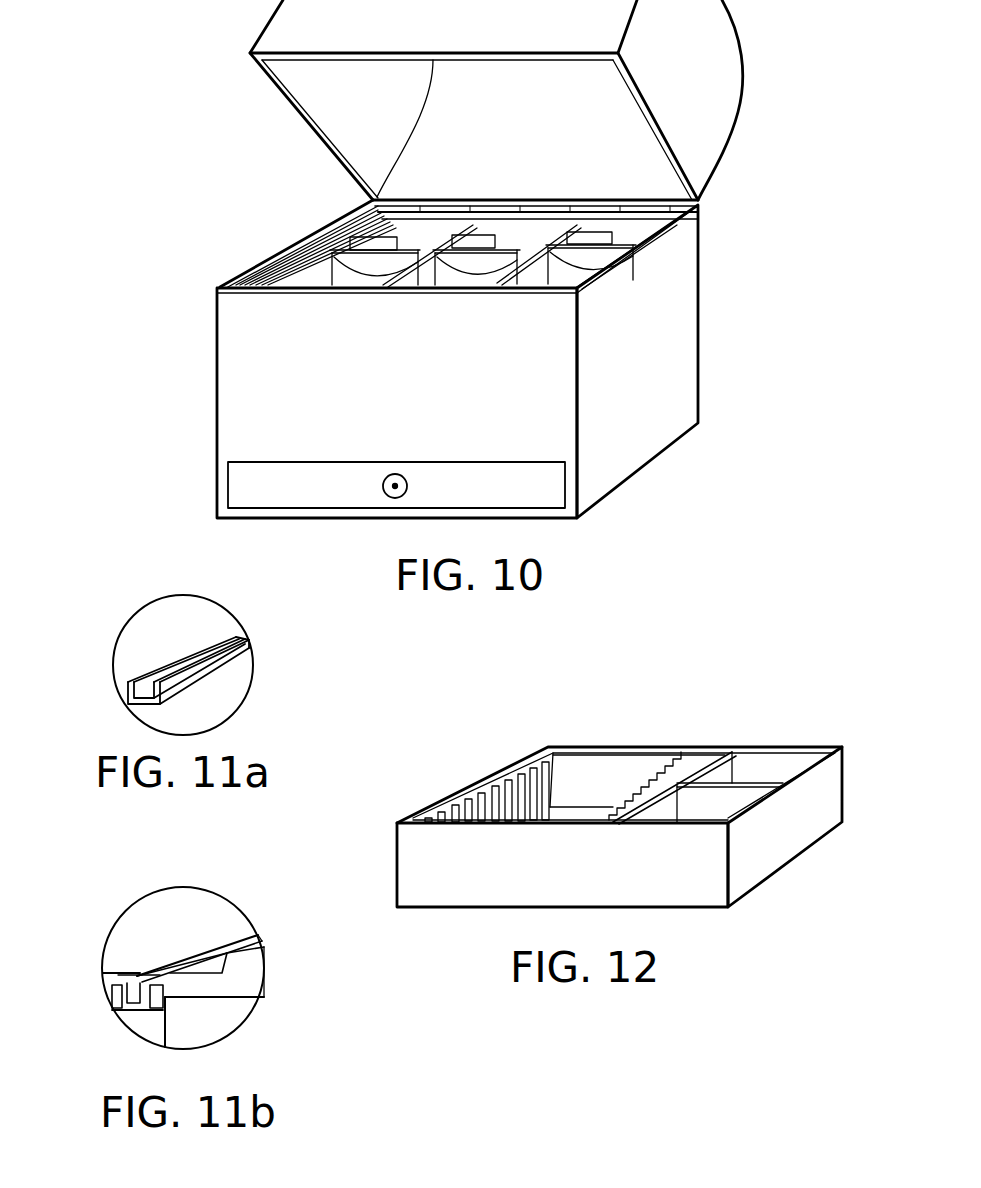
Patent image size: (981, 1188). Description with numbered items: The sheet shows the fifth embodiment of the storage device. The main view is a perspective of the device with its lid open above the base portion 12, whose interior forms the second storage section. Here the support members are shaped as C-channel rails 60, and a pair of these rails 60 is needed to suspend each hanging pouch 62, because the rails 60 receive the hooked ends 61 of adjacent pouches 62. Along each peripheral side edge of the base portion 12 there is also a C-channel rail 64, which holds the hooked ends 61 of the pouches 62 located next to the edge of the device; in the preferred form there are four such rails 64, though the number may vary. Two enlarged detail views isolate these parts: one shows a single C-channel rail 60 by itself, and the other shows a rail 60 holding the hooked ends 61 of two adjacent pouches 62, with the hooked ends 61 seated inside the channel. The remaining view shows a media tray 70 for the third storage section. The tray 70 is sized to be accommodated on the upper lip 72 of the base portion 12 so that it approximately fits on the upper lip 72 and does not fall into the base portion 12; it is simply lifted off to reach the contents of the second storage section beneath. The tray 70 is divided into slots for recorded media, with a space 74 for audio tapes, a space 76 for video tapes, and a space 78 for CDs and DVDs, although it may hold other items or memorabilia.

In FIG. 10, the base portion 12 is at (217, 355).
In FIG. 10, the C-channel rail 60 is at (310, 233).
In FIG. 11A, the C-channel rail 60 is at (180, 658).
In FIG. 11B, the C-channel rail 60 is at (197, 947).
In FIG. 11B, the hooked end 61 is at (123, 1013).
In FIG. 10, the pouch 62 is at (600, 236).
In FIG. 11B, the pouch 62 is at (117, 973).
In FIG. 10, the C-channel rail 64 is at (262, 267).
In FIG. 12, the tray 70 is at (700, 735).
In FIG. 10, the upper lip 72 is at (347, 250).
In FIG. 12, the space 74 is at (705, 807).
In FIG. 12, the space 76 is at (598, 775).
In FIG. 12, the space 78 is at (757, 760).